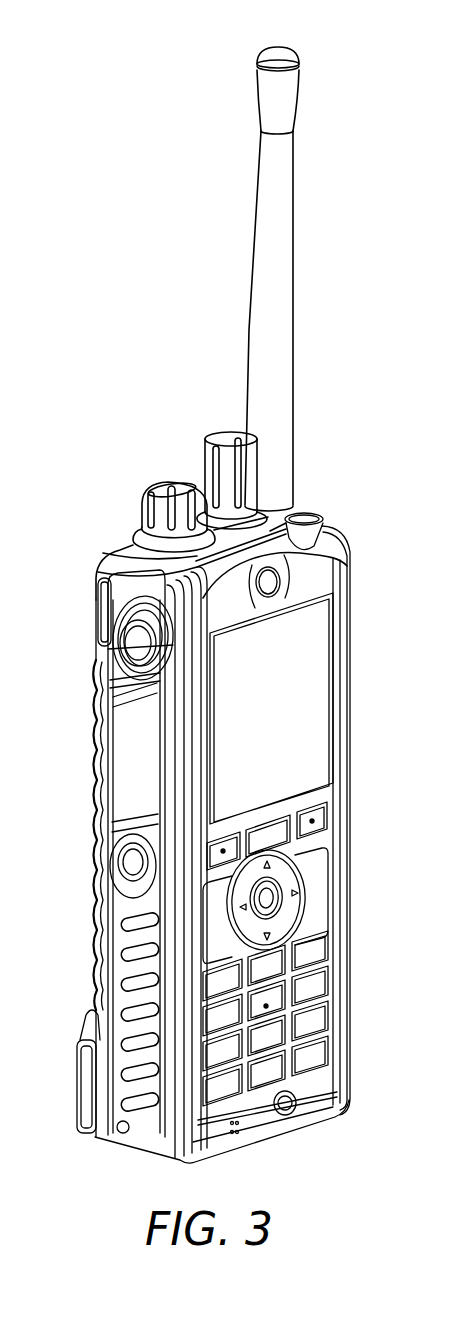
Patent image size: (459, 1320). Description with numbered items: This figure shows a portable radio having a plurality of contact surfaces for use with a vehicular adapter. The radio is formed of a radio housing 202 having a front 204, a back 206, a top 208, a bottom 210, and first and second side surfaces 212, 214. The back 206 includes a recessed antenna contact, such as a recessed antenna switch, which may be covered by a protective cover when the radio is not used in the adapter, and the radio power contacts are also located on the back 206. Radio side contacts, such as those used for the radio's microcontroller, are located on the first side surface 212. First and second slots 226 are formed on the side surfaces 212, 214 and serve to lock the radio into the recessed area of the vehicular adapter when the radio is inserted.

The radio housing 202 is at (312, 585).
The front 204 is at (312, 802).
The back 206 is at (103, 812).
The top 208 is at (297, 506).
The bottom 210 is at (137, 1152).
The first side surface 212 is at (340, 948).
The second side surface 214 is at (132, 977).
The first and second slots 226 is at (99, 610).